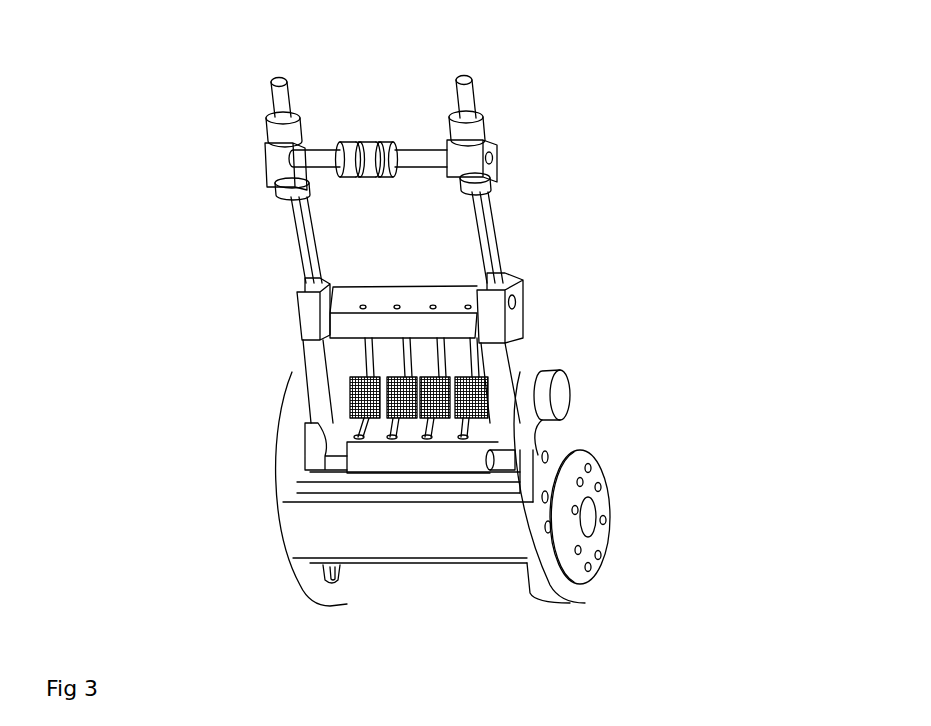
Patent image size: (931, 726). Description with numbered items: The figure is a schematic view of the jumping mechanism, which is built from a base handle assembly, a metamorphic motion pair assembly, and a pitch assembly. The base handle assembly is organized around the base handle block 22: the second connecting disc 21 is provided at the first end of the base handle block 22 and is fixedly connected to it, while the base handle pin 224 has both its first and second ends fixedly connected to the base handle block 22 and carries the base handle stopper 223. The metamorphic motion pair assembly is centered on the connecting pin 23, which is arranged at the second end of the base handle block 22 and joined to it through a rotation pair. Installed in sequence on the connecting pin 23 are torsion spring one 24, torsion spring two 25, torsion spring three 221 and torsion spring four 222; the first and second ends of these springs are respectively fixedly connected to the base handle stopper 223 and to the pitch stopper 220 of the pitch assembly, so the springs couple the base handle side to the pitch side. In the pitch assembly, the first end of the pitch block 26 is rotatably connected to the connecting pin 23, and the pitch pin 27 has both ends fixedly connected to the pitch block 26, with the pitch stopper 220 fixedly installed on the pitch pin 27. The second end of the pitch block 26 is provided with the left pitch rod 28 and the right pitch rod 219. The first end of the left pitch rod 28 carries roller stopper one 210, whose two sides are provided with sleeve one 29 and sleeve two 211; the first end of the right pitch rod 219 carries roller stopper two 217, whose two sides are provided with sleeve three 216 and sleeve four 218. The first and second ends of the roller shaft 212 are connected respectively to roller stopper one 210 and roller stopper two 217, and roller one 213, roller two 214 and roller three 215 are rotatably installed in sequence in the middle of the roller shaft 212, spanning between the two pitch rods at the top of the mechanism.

The second connecting disc 21 is at (595, 543).
The base handle block 22 is at (550, 440).
The connecting pin 23 is at (560, 395).
The torsion spring one 24 is at (477, 397).
The torsion spring two 25 is at (433, 392).
The pitch block 26 is at (508, 320).
The pitch pin 27 is at (517, 297).
The left pitch rod 28 is at (483, 230).
The sleeve one 29 is at (483, 173).
The roller stopper one 210 is at (486, 142).
The sleeve two 211 is at (472, 125).
The roller shaft 212 is at (410, 155).
The roller one 213 is at (383, 147).
The roller two 214 is at (360, 155).
The roller three 215 is at (340, 150).
The sleeve three 216 is at (267, 121).
The roller stopper two 217 is at (275, 167).
The sleeve four 218 is at (300, 187).
The right pitch rod 219 is at (300, 250).
The pitch stopper 220 is at (345, 319).
The torsion spring three 221 is at (395, 392).
The torsion spring four 222 is at (373, 410).
The base handle stopper 223 is at (360, 460).
The base handle pin 224 is at (316, 465).